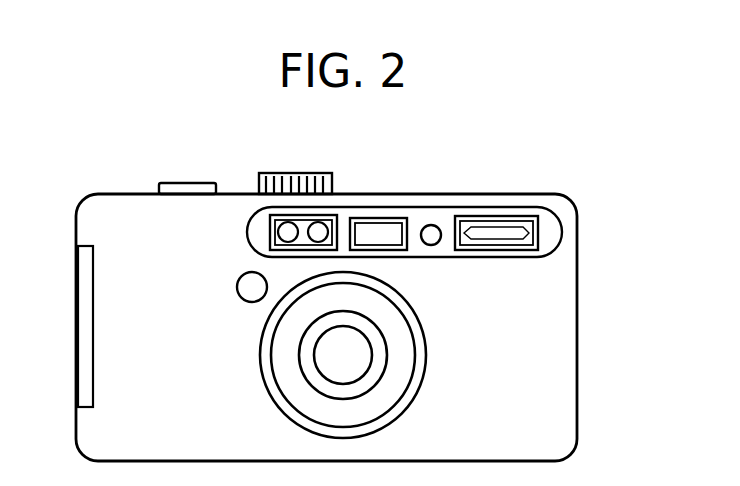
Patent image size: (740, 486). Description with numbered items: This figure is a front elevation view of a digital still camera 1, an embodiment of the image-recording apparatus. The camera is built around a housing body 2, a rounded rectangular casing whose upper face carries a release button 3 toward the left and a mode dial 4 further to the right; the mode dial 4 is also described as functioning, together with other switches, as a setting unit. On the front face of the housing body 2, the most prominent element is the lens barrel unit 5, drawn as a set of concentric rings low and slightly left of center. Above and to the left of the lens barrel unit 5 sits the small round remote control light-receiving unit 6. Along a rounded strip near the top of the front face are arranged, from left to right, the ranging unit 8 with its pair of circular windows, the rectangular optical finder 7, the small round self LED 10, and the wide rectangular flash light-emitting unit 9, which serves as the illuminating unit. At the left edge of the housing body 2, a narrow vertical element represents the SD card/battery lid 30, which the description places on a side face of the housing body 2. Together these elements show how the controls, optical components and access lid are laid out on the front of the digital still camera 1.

The digital still camera 1 is at (588, 178).
The housing body 2 is at (578, 336).
The release button 3 is at (190, 184).
The mode dial 4 is at (297, 174).
The lens barrel unit 5 is at (372, 363).
The remote control light-receiving unit 6 is at (237, 287).
The optical finder 7 is at (380, 218).
The ranging unit 8 is at (270, 237).
The flash light-emitting unit 9 is at (494, 217).
The self LED 10 is at (431, 224).
The SD card/battery lid 30 is at (81, 330).